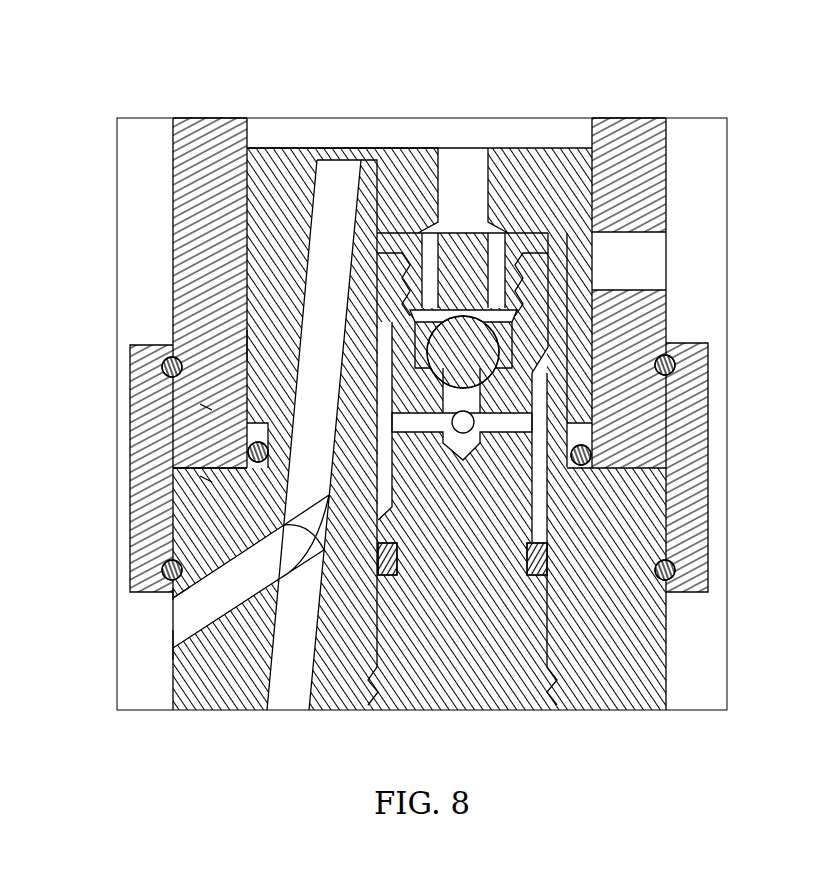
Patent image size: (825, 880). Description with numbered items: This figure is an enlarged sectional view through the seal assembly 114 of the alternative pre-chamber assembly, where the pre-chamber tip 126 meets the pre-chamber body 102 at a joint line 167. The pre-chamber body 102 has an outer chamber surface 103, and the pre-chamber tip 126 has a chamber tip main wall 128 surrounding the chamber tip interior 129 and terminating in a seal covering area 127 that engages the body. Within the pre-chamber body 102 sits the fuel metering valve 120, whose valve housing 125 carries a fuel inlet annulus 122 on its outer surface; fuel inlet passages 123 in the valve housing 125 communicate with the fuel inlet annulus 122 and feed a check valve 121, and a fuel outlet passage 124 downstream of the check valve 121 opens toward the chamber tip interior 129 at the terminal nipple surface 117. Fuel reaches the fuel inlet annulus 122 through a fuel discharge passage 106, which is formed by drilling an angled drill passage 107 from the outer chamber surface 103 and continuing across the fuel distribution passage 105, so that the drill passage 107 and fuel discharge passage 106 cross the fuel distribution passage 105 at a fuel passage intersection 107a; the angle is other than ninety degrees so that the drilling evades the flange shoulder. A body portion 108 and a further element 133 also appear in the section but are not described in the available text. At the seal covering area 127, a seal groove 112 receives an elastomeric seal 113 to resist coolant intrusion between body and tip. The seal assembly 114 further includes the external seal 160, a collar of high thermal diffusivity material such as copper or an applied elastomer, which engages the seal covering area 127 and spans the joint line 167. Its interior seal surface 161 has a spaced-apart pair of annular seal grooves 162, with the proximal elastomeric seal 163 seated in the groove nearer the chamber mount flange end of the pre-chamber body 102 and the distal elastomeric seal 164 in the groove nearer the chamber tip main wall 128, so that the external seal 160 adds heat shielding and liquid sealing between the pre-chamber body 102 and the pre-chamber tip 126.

The pre-chamber body 102 is at (198, 720).
The outer chamber surface 103 is at (172, 675).
The fuel distribution passage 105 is at (305, 698).
The fuel discharge passage 106 is at (281, 575).
The drill passage 107 is at (172, 640).
The fuel passage intersection 107a is at (172, 598).
The wall 108 is at (368, 158).
The seal groove 112 is at (572, 434).
The elastomeric seal 113 is at (592, 457).
The seal assembly 114 is at (711, 566).
The terminal nipple surface 117 is at (294, 149).
The fuel metering valve 120 is at (486, 723).
The check valve 121 is at (462, 352).
The fuel inlet annulus 122 is at (534, 488).
The fuel inlet passages 123 is at (420, 408).
The fuel outlet passage 124 is at (487, 168).
The valve housing 125 is at (432, 680).
The pre-chamber tip 126 is at (173, 208).
The seal covering area 127 is at (182, 443).
The chamber tip main wall 128 is at (196, 168).
The chamber tip interior 129 is at (249, 121).
The inner face 133 is at (250, 343).
The external seal 160 is at (128, 526).
The interior seal surface 161 is at (207, 472).
The annular seal grooves 162 is at (172, 368).
The proximal elastomeric seal 163 is at (172, 595).
The distal elastomeric seal 164 is at (207, 407).
The joint line 167 is at (207, 478).